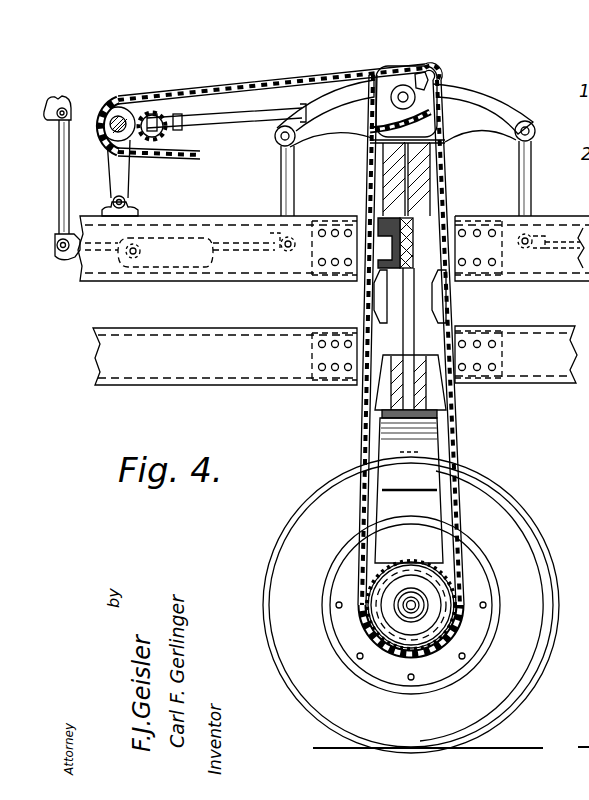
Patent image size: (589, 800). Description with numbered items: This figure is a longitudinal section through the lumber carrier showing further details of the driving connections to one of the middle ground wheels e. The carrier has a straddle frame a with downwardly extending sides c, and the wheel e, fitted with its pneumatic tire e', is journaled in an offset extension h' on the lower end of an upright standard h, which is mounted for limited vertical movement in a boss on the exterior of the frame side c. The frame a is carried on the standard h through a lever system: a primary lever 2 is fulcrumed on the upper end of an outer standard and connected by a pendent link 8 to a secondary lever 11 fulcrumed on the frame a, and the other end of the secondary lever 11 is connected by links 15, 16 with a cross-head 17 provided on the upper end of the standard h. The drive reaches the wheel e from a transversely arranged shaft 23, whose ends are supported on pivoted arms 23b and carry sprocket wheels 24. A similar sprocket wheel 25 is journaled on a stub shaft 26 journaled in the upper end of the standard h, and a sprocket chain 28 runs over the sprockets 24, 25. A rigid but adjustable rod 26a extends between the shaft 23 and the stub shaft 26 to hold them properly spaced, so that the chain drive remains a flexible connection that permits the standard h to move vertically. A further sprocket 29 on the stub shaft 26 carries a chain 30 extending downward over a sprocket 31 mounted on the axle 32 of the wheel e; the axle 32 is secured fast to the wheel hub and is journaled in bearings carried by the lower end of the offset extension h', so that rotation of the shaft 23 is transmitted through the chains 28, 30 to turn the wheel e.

The primary lever 2 is at (57, 97).
The pendent link 8 is at (66, 175).
The secondary lever 11 is at (249, 266).
The link 15 is at (291, 175).
The link 16 is at (520, 173).
The cross-head 17 is at (468, 108).
The transversely arranged shaft 23 is at (121, 115).
The pivoted arm 23b is at (123, 180).
The sprocket wheel 24 is at (149, 115).
The sprocket wheel 25 is at (427, 76).
The stub shaft 26 is at (397, 88).
The adjustable rod 26a is at (247, 125).
The sprocket chain 28 is at (250, 81).
The sprocket 29 is at (404, 82).
The chain 30 is at (364, 433).
The sprocket 31 is at (418, 560).
The axle 32 is at (420, 602).
The straddle frame a is at (291, 397).
The frame side c is at (304, 275).
The ground wheel e is at (412, 605).
The pneumatic tire e' is at (376, 593).
The upright standard h is at (426, 386).
The offset extension h' is at (436, 456).